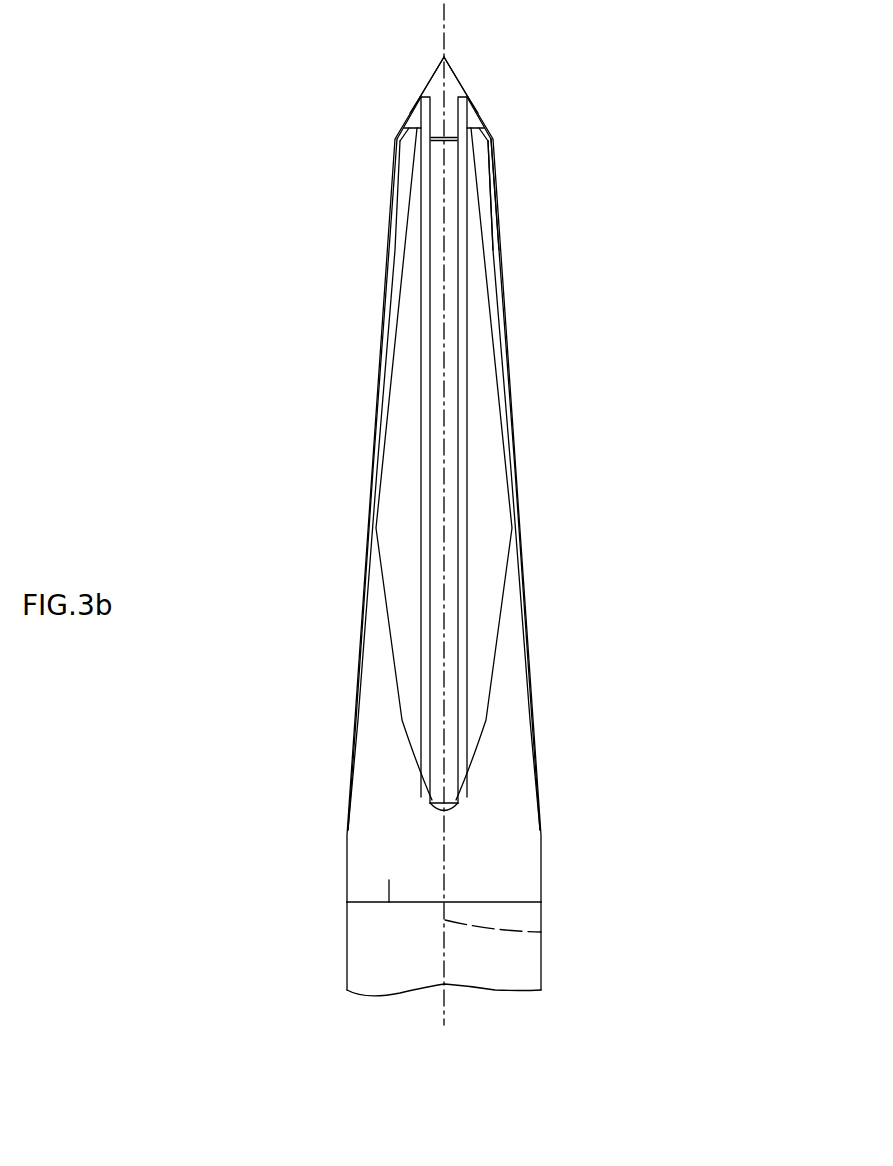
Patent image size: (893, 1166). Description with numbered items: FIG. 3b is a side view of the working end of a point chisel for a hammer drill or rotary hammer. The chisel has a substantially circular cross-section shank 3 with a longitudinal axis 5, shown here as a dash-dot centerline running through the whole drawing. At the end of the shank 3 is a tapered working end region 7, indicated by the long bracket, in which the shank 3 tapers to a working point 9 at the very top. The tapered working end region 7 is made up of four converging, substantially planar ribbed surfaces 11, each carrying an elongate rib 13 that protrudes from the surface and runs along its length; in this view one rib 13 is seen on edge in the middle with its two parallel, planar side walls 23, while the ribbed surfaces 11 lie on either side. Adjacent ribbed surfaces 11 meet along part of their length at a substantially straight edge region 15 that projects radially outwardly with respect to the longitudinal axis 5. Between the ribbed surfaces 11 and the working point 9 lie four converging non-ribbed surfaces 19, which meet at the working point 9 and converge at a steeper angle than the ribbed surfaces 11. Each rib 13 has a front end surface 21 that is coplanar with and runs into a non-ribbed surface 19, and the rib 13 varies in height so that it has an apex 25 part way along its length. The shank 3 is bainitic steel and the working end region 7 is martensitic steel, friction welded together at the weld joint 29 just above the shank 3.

The shank 3 is at (368, 932).
The longitudinal axis 5 is at (541, 932).
The tapered working end region 7 is at (717, 63).
The working point 9 is at (446, 55).
The ribbed surface 11 is at (405, 522).
The elongate rib 13 is at (500, 132).
The substantially straight edge region 15 is at (397, 313).
The non-ribbed surface 19 is at (437, 88).
The front end surface 21 is at (410, 121).
The side wall 23 is at (488, 167).
The apex 25 is at (397, 138).
The weld joint 29 is at (389, 902).